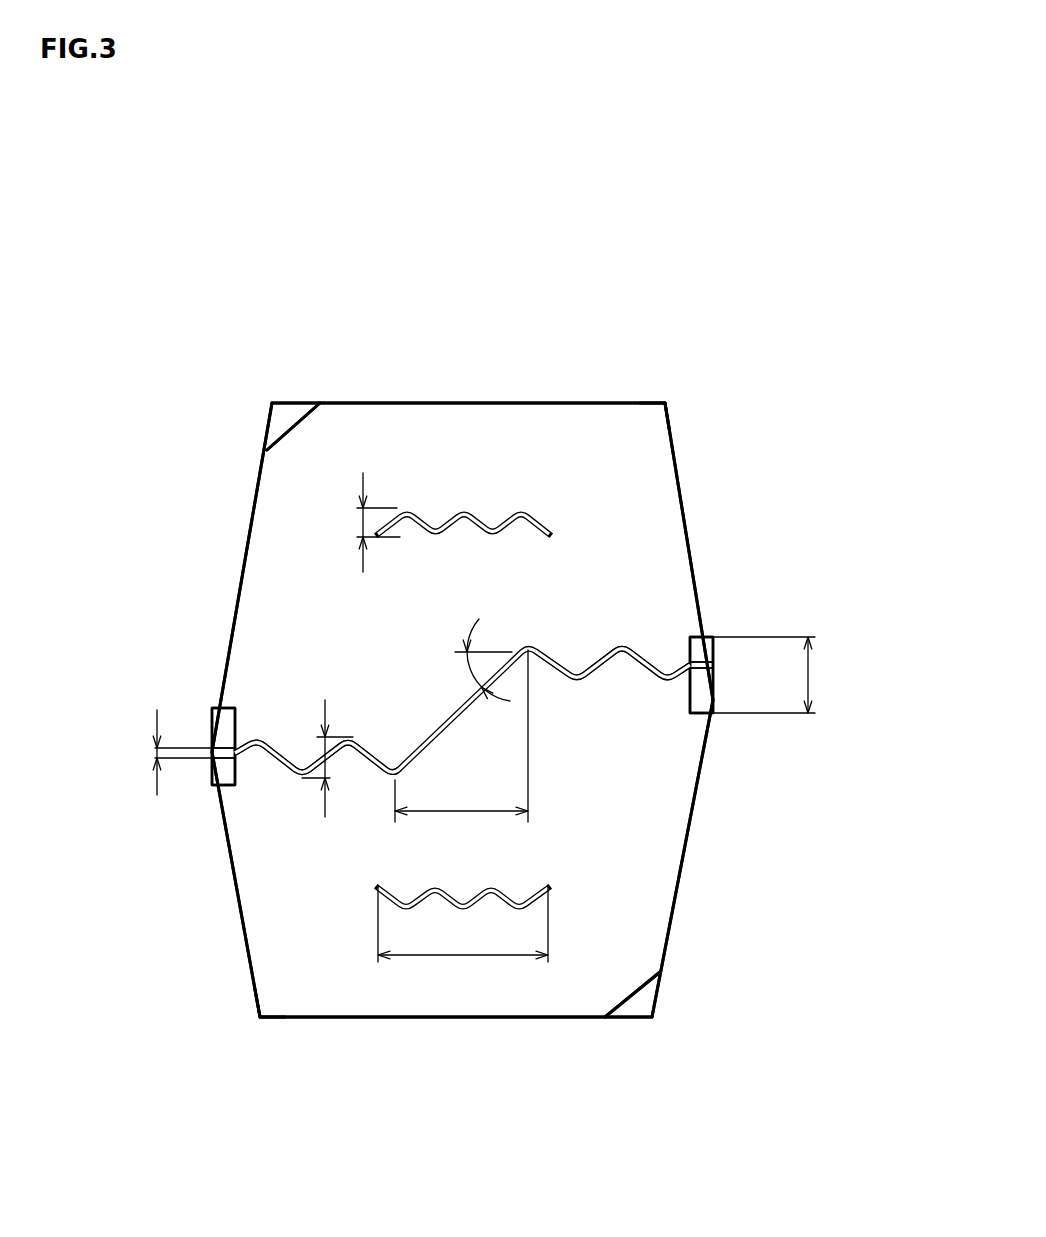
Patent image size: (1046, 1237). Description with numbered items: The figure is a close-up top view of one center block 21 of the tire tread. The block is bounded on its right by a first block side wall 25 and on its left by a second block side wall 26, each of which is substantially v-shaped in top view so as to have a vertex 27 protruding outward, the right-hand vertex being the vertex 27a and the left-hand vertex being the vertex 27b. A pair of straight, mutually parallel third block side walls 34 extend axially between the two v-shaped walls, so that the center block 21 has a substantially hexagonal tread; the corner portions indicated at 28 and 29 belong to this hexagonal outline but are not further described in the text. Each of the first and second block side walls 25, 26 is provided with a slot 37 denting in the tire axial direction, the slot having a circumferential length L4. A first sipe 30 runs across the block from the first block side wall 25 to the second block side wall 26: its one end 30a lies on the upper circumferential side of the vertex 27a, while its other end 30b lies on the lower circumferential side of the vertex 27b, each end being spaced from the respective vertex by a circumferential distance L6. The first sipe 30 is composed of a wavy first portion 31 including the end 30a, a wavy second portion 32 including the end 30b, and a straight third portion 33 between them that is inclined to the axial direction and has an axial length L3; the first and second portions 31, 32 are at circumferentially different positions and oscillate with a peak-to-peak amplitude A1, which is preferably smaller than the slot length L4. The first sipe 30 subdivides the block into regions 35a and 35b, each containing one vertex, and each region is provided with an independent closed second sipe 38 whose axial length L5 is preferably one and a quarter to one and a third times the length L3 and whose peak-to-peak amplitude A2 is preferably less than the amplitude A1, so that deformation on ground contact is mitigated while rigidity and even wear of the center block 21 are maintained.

The center block 21 is at (340, 460).
The first block side wall 25 is at (700, 803).
The second block side wall 26 is at (257, 492).
The vertex 27 is at (461, 711).
The vertex of the first block side wall 27a is at (716, 713).
The vertex of the second block side wall 27b is at (212, 745).
The upper right corner 28 is at (665, 403).
The lower left corner 29 is at (260, 1017).
The first sipe 30 is at (442, 732).
The one end of the first sipe 30a is at (713, 667).
The other end of the first sipe 30b is at (211, 760).
The first portion 31 is at (597, 665).
The second portion 32 is at (283, 762).
The third portion 33 is at (367, 670).
The third block side walls 34 is at (490, 403).
The region 35a is at (563, 465).
The region 35b is at (327, 977).
The slot 37 is at (222, 720).
The second sipe 38 is at (447, 520).
The peak-to-peak amplitude A1 is at (323, 748).
The peak-to-peak amplitude of the second sipe A2 is at (361, 522).
The axial length of the third portion L3 is at (461, 750).
The length of the slot L4 is at (784, 675).
The axial length of the second sipe L5 is at (463, 938).
The circumferential distance L6 is at (159, 752).